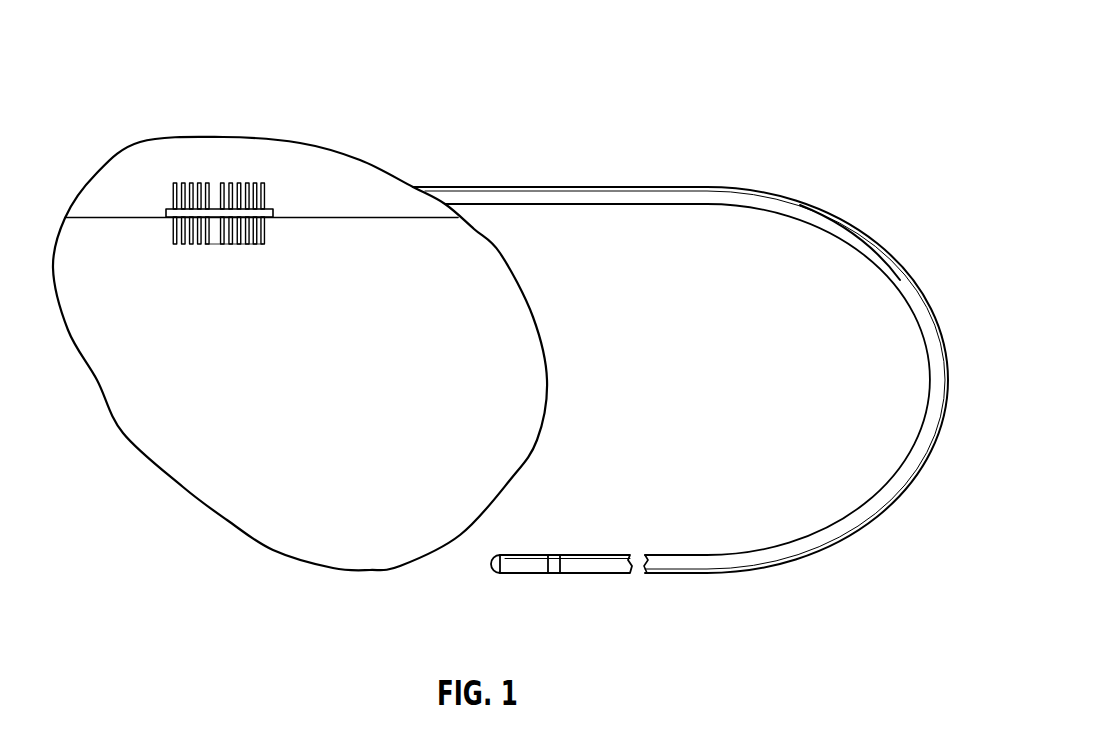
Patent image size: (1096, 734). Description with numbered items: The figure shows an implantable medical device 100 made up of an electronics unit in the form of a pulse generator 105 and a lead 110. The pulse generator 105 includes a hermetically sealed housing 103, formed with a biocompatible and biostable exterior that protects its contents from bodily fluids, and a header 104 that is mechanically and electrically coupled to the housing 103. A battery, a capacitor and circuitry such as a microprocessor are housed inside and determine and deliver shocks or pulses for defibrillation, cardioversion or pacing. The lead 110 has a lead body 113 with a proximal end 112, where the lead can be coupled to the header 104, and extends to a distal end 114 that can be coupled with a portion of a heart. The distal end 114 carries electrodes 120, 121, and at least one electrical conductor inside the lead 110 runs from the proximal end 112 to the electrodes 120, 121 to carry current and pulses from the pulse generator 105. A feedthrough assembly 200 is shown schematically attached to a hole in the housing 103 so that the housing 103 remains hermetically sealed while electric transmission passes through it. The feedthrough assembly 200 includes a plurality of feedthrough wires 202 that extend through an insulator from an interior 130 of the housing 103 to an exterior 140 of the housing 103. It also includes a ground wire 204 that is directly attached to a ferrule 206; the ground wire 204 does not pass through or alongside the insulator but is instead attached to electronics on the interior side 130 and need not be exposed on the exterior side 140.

The implantable medical device 100 is at (512, 48).
The housing 103 is at (188, 480).
The header 104 is at (306, 142).
The pulse generator 105 is at (80, 365).
The lead 110 is at (700, 186).
The proximal end 112 is at (450, 186).
The lead body 113 is at (882, 258).
The distal end 114 is at (525, 573).
The electrode 120 is at (492, 566).
The electrode 121 is at (555, 555).
The interior of the housing 130 is at (473, 277).
The exterior of the housing 140 is at (356, 180).
The feedthrough assembly 200 is at (155, 157).
The feedthrough wires 202 is at (197, 183).
The ground wire 204 is at (215, 245).
The ferrule 206 is at (168, 213).